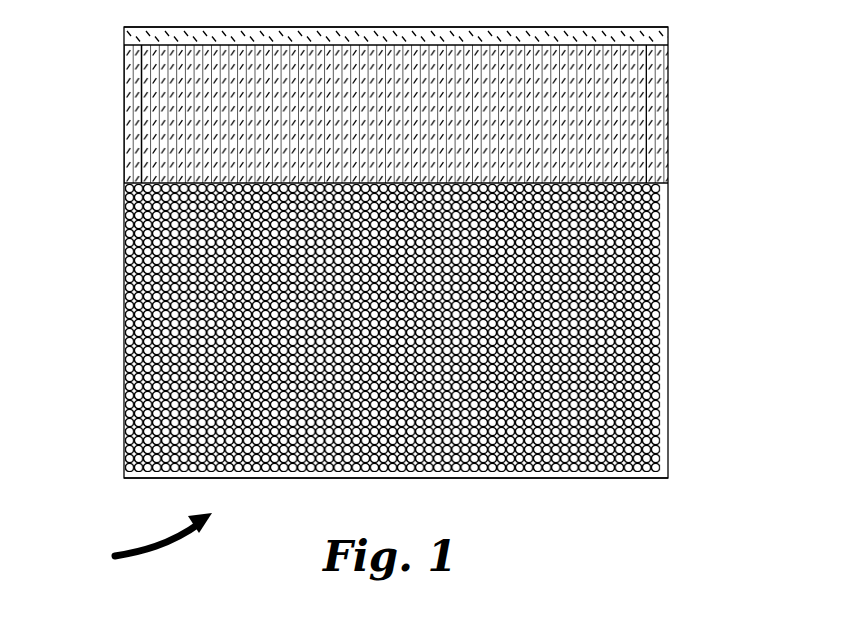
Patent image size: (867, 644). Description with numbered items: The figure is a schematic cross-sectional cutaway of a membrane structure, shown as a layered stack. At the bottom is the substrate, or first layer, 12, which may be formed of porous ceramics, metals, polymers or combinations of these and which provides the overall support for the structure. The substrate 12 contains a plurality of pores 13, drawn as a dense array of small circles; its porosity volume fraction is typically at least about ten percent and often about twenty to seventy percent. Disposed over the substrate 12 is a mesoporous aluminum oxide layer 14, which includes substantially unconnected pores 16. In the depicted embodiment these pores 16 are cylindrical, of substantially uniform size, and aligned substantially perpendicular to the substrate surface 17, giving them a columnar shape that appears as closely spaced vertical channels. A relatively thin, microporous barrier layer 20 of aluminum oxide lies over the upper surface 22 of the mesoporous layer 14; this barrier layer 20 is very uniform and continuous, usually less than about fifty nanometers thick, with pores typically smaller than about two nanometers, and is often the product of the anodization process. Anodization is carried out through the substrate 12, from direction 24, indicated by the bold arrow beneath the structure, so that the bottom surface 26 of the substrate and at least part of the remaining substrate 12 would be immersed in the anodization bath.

The substrate 12 is at (668, 252).
The pores 13 is at (138, 237).
The mesoporous aluminum oxide layer 14 is at (668, 116).
The pores 16 is at (140, 98).
The substrate surface 17 is at (145, 174).
The barrier layer 20 is at (663, 42).
The upper surface 22 is at (146, 40).
The direction 24 is at (132, 580).
The bottom surface 26 is at (628, 482).